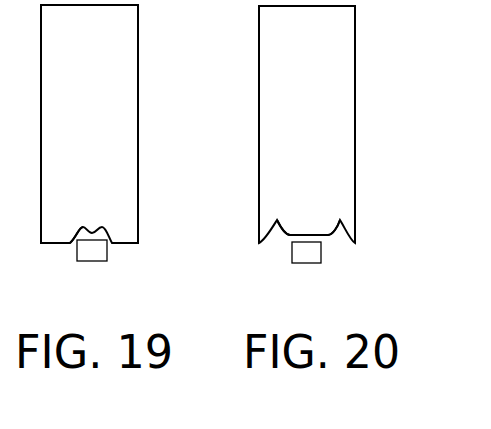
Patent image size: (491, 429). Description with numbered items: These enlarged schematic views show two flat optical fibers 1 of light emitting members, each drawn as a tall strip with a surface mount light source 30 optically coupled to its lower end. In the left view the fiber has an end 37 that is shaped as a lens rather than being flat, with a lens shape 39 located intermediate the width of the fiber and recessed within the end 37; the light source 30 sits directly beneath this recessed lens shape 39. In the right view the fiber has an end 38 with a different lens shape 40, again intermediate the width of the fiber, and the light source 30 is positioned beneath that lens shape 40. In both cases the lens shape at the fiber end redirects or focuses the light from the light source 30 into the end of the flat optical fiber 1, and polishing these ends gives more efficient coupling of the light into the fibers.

In FIG. 19, the flat optical fiber 1 is at (138, 125).
In FIG. 20, the flat optical fiber 1 is at (355, 127).
In FIG. 19, the surface mount light source 30 is at (92, 261).
In FIG. 20, the surface mount light source 30 is at (308, 263).
In FIG. 19, the fiber end 37 is at (127, 243).
In FIG. 20, the fiber end 38 is at (330, 236).
In FIG. 19, the lens shape 39 is at (71, 242).
In FIG. 20, the lens shape 40 is at (288, 236).